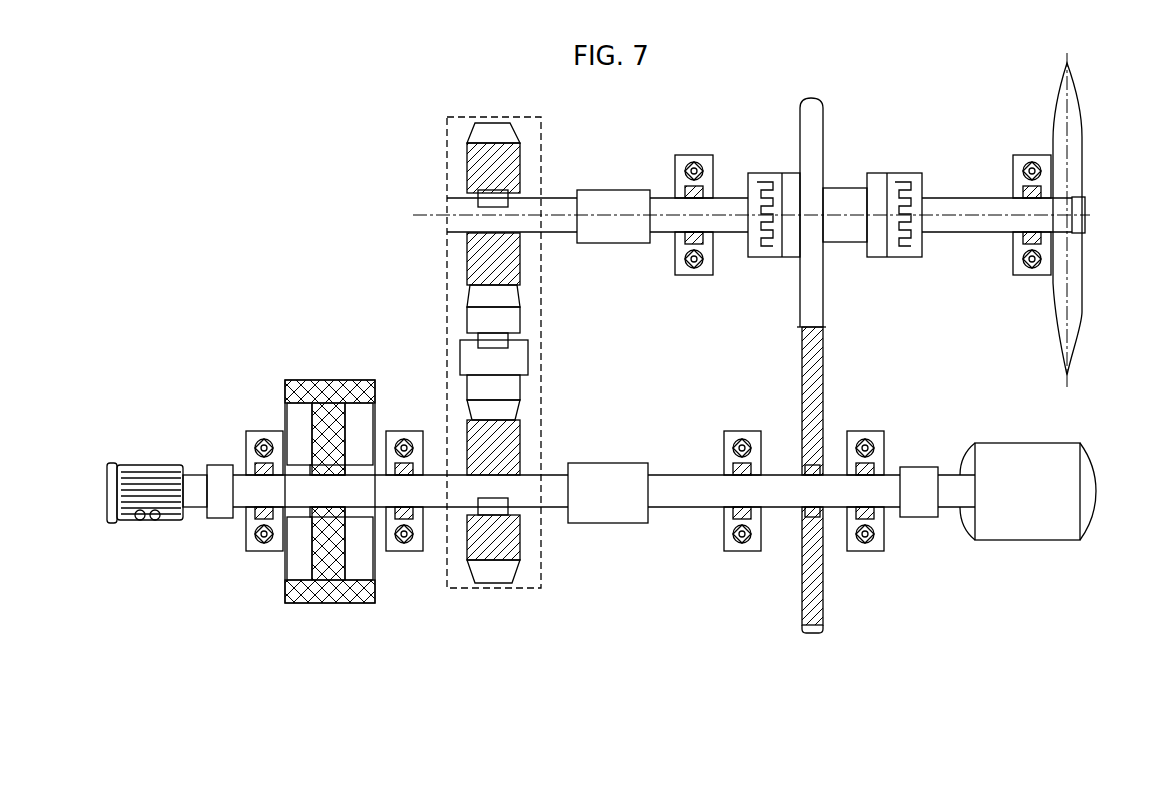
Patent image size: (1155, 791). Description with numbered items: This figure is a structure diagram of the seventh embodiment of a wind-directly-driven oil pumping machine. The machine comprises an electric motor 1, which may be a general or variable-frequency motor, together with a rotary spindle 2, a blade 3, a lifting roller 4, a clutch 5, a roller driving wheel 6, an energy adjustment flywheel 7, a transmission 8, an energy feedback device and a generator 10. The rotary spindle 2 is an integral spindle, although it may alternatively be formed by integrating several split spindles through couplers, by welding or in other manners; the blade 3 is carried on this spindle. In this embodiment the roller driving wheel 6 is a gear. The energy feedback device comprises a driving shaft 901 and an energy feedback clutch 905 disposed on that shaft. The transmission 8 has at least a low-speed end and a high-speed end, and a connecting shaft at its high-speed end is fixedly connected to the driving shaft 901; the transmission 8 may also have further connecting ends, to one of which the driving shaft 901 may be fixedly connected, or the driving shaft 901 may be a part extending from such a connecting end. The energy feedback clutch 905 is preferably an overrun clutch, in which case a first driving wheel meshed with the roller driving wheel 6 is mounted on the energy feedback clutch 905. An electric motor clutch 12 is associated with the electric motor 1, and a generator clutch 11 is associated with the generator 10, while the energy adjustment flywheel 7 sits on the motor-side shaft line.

The electric motor 1 is at (155, 518).
The electric motor clutch 12 is at (225, 508).
The energy adjustment flywheel 7 is at (320, 604).
The transmission 8 is at (460, 288).
The driving shaft 901 is at (697, 480).
The energy feedback clutch 905 is at (822, 578).
The generator clutch 11 is at (920, 478).
The generator 10 is at (1045, 527).
The clutch 5 is at (755, 190).
The roller driving wheel 6 is at (805, 145).
The lifting roller 4 is at (851, 195).
The rotary spindle 2 is at (1088, 214).
The blade 3 is at (1080, 118).